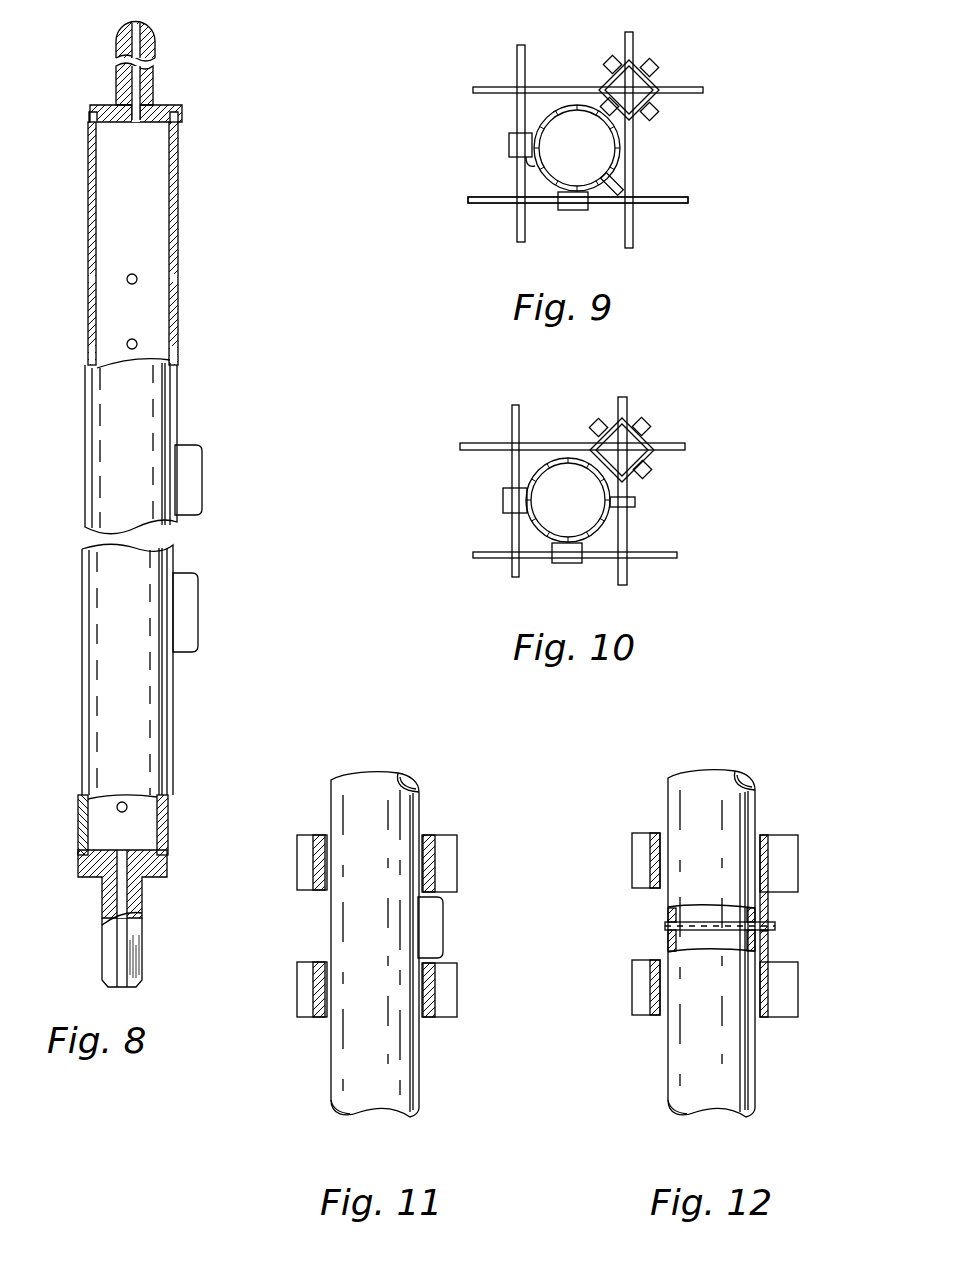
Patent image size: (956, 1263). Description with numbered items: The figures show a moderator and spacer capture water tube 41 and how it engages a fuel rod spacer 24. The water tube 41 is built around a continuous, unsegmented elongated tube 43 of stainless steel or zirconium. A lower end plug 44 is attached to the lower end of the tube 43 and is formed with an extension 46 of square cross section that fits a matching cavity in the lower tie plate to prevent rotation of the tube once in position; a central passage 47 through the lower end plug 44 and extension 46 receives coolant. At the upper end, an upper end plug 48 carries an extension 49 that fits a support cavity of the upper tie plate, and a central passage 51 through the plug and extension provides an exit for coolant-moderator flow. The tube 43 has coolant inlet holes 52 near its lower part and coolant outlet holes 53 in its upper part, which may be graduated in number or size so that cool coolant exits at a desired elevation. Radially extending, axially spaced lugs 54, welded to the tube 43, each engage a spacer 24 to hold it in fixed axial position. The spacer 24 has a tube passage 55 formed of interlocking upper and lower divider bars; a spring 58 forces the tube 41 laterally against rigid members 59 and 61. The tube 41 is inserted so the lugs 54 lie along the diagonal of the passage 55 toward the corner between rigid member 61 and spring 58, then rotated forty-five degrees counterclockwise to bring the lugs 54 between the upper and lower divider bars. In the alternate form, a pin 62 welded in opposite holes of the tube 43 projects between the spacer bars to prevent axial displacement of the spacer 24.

In FIG. 9, the fuel rod spacer 24 is at (496, 74).
In FIG. 10, the fuel rod spacer 24 is at (492, 431).
In FIG. 11, the fuel rod spacer 24 is at (321, 816).
In FIG. 12, the fuel rod spacer 24 is at (642, 818).
In FIG. 8, the spacer capture water tube 41 is at (204, 387).
In FIG. 9, the spacer capture water tube 41 is at (620, 148).
In FIG. 10, the spacer capture water tube 41 is at (556, 463).
In FIG. 11, the spacer capture water tube 41 is at (418, 779).
In FIG. 12, the spacer capture water tube 41 is at (754, 782).
In FIG. 8, the elongated tube 43 is at (171, 733).
In FIG. 8, the lower end plug 44 is at (78, 872).
In FIG. 8, the extension 46 is at (143, 947).
In FIG. 8, the central passage 47 is at (118, 917).
In FIG. 8, the upper end plug 48 is at (90, 108).
In FIG. 8, the extension 49 is at (156, 39).
In FIG. 8, the central passage 51 is at (133, 80).
In FIG. 8, the coolant inlet holes 52 is at (168, 805).
In FIG. 8, the coolant outlet holes 53 is at (178, 277).
In FIG. 8, the spacer engaging lugs 54 is at (203, 468).
In FIG. 9, the spacer engaging lugs 54 is at (620, 183).
In FIG. 10, the spacer engaging lugs 54 is at (636, 505).
In FIG. 11, the spacer engaging lugs 54 is at (444, 930).
In FIG. 9, the tube passage 55 is at (537, 112).
In FIG. 9, the spring 58 is at (598, 108).
In FIG. 9, the rigid member 59 is at (525, 172).
In FIG. 9, the rigid member 61 is at (557, 196).
In FIG. 12, the pin 62 is at (668, 921).